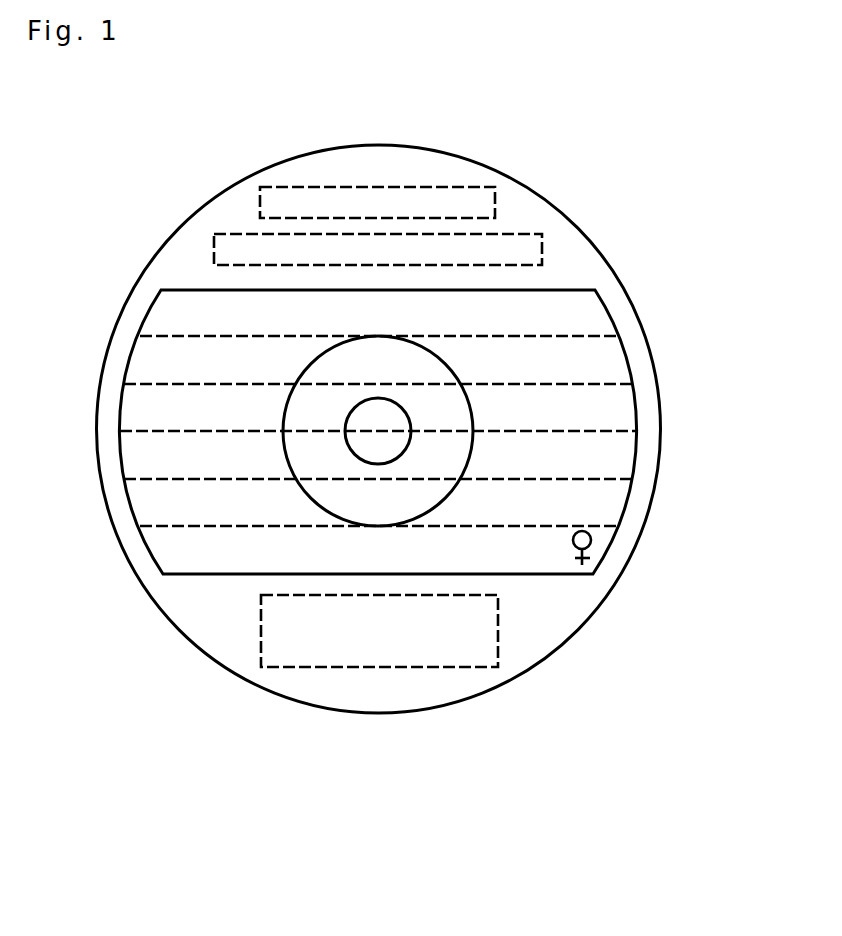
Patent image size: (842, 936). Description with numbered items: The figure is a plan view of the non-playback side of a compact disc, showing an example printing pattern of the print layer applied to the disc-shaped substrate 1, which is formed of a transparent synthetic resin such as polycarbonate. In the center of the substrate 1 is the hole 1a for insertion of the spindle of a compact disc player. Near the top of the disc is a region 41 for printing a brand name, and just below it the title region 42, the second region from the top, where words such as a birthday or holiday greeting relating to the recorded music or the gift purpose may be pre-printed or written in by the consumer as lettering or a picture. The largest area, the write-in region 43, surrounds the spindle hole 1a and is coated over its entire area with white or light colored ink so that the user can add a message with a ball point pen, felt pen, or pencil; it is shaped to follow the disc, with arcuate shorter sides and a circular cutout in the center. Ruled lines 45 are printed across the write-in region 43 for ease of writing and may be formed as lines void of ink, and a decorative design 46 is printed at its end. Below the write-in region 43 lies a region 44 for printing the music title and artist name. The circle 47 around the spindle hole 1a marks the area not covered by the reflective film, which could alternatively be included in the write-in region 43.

The substrate 1 is at (652, 357).
The hole 1a is at (361, 437).
The region 41 is at (486, 203).
The title region 42 is at (531, 255).
The write-in region 43 is at (610, 500).
The region 44 is at (490, 638).
The ruled lines 45 is at (583, 332).
The decorative design 46 is at (597, 545).
The circle 47 is at (453, 490).